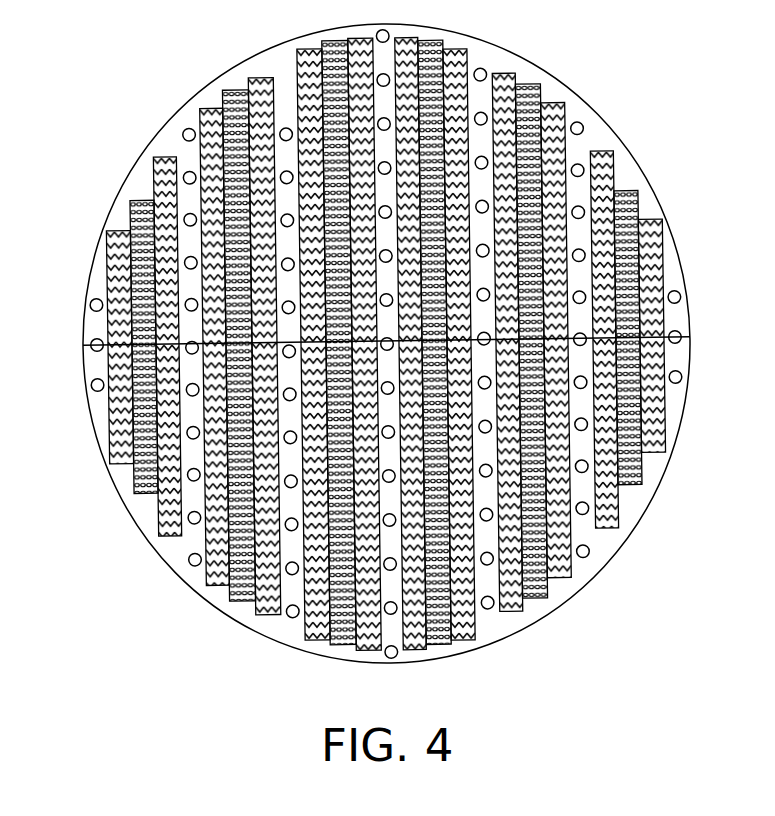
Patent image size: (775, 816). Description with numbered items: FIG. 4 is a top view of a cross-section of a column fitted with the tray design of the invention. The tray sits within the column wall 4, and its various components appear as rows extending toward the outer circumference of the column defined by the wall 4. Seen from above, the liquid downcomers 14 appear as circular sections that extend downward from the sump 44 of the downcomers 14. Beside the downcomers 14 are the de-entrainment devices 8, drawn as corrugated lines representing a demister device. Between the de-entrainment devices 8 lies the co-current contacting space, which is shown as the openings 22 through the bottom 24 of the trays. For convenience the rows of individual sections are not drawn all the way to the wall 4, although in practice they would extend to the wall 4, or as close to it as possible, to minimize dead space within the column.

The column wall 4 is at (662, 226).
The de-entrainment devices 8 is at (148, 150).
The liquid downcomers 14 is at (567, 154).
The openings 22 is at (126, 460).
The bottom of the trays 24 is at (127, 490).
The sump 44 is at (190, 482).